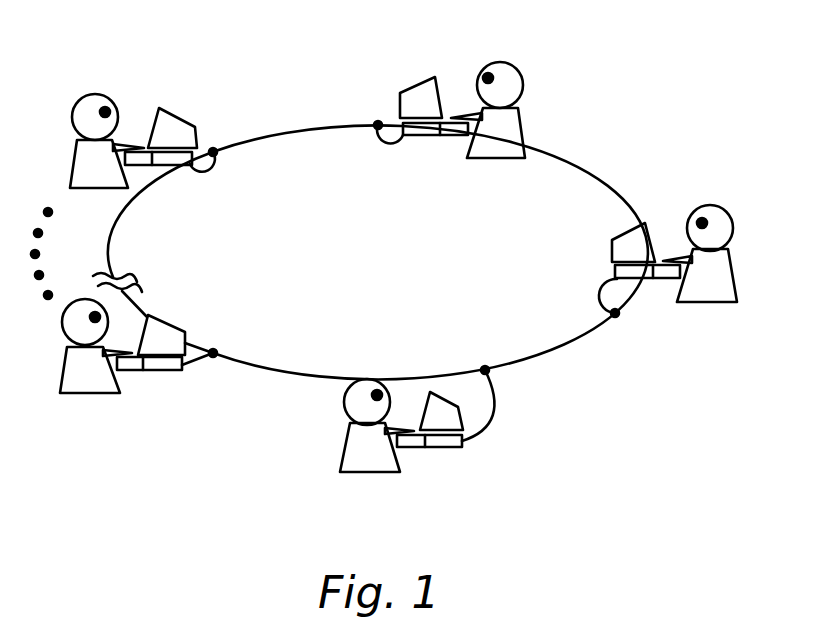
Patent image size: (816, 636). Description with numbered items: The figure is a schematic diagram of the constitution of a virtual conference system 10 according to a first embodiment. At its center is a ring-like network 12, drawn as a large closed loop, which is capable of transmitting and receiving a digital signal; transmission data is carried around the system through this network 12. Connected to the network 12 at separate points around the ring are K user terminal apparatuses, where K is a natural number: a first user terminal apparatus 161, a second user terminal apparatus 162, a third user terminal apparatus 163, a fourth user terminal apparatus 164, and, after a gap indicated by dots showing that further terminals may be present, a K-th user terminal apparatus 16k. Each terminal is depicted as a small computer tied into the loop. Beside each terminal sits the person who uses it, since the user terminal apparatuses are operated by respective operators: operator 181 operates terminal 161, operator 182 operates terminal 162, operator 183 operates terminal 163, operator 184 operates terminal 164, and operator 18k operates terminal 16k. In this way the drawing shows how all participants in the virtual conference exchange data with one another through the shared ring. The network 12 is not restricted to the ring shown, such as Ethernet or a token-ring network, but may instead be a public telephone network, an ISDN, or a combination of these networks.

The virtual conference system 10 is at (620, 97).
The ring-like network 12 is at (570, 344).
The user terminal apparatus 16k is at (177, 108).
The user terminal apparatus 161 is at (413, 92).
The user terminal apparatus 162 is at (644, 224).
The user terminal apparatus 163 is at (447, 448).
The user terminal apparatus 164 is at (172, 365).
The operator 18k is at (115, 93).
The operator 181 is at (540, 22).
The operator 182 is at (720, 295).
The operator 183 is at (362, 473).
The operator 184 is at (80, 395).